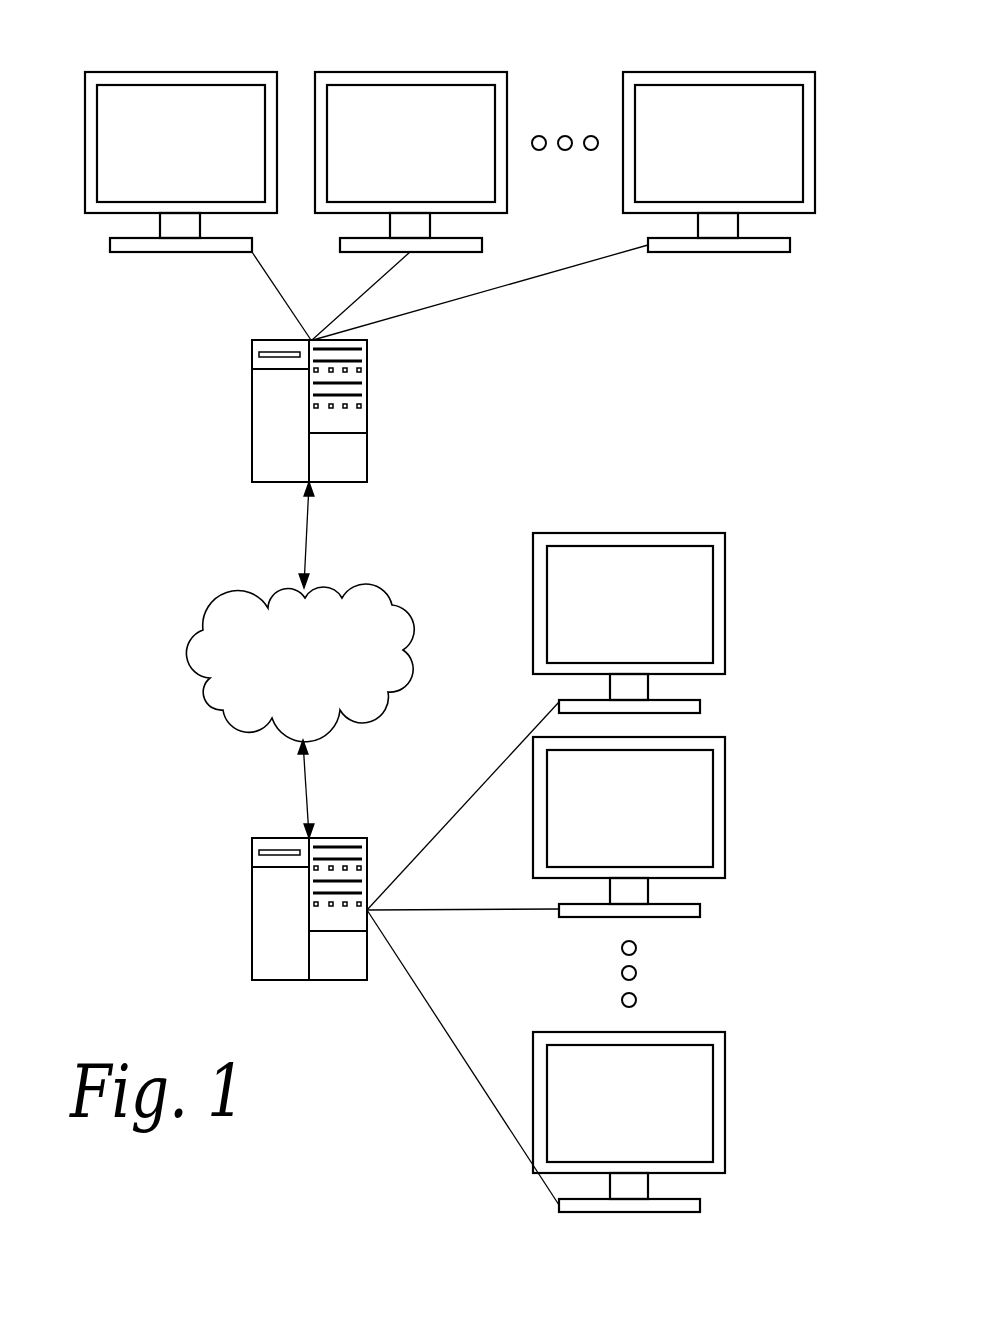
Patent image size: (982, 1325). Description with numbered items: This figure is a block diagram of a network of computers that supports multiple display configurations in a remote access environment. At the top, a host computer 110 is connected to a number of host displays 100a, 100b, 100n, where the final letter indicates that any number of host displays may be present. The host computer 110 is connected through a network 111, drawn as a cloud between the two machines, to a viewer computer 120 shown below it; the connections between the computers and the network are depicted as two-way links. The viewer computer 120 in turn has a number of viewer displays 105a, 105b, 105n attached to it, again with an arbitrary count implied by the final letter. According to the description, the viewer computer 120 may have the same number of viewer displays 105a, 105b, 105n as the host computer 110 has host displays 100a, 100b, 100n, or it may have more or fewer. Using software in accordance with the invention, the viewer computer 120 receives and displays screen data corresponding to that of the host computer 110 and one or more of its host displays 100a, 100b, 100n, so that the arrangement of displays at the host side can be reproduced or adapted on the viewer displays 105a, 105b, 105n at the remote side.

The host display 100a is at (181, 128).
The host display 100b is at (411, 128).
The host display 100n is at (719, 128).
The host computer 110 is at (202, 411).
The network 111 is at (300, 663).
The viewer computer 120 is at (202, 909).
The viewer display 105a is at (696, 623).
The viewer display 105b is at (696, 827).
The viewer display 105n is at (697, 1122).